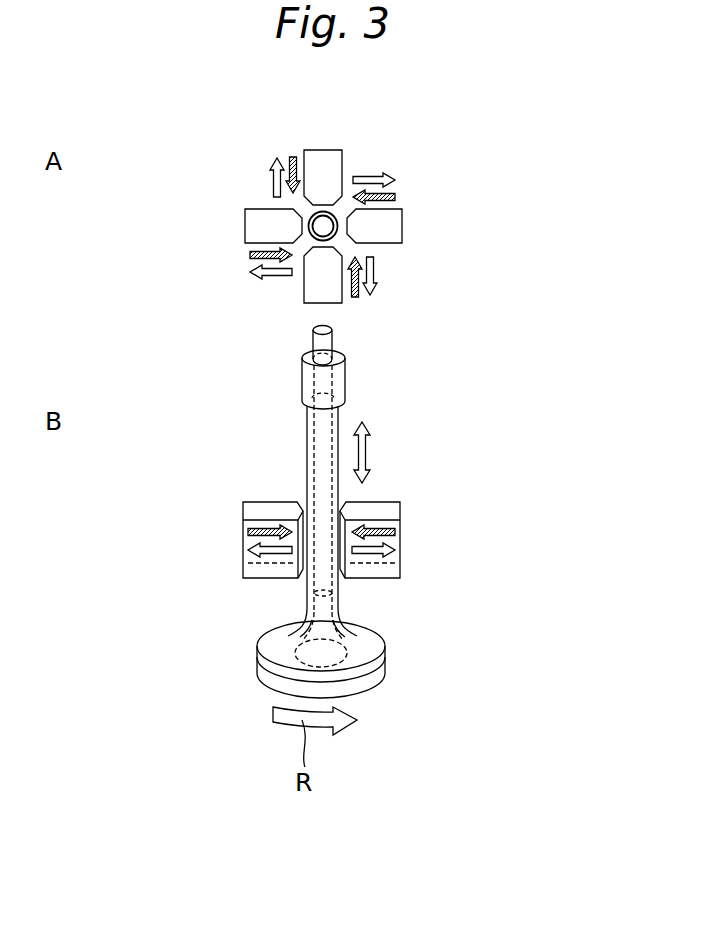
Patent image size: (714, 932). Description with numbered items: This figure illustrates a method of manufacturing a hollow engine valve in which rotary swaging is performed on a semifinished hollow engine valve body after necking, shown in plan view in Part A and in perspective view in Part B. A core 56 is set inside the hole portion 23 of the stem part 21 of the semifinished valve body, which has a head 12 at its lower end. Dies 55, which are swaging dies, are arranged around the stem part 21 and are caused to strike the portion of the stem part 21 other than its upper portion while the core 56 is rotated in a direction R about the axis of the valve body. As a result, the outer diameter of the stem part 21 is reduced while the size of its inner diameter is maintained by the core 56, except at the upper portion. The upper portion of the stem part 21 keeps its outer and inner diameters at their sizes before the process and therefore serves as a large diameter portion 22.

The valve head 12 is at (378, 650).
The stem part 21 is at (338, 230).
The large diameter portion 22 is at (337, 382).
The hole portion 23 is at (325, 432).
The dies 55 is at (322, 158).
The core 56 is at (322, 222).